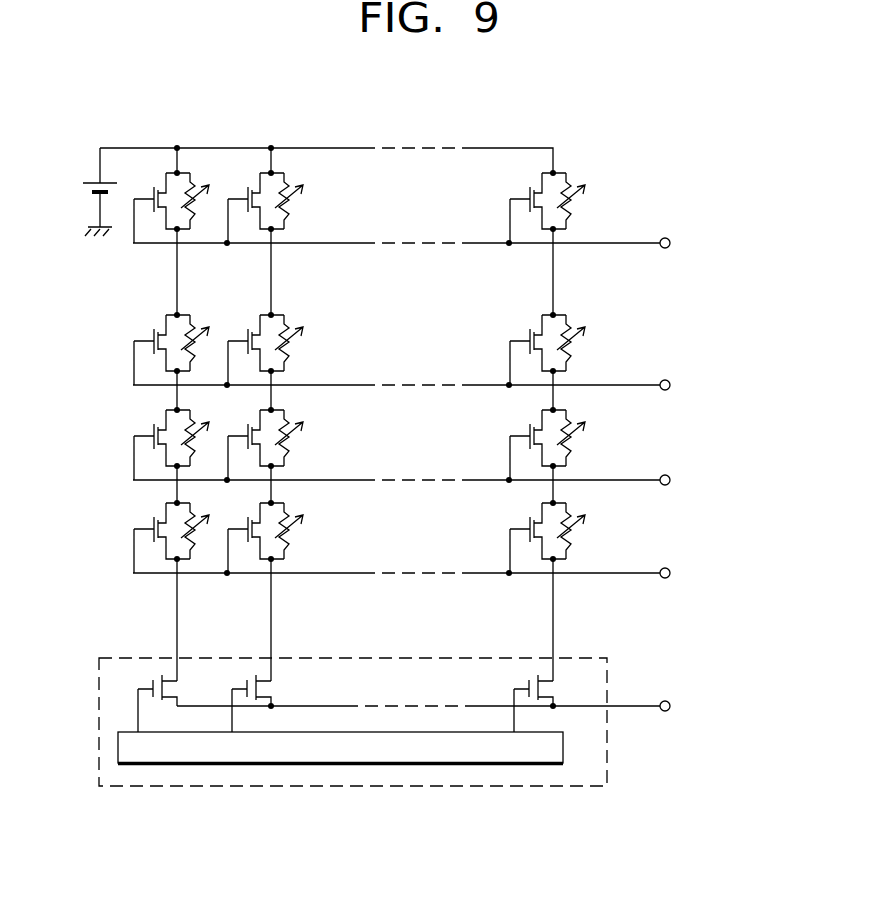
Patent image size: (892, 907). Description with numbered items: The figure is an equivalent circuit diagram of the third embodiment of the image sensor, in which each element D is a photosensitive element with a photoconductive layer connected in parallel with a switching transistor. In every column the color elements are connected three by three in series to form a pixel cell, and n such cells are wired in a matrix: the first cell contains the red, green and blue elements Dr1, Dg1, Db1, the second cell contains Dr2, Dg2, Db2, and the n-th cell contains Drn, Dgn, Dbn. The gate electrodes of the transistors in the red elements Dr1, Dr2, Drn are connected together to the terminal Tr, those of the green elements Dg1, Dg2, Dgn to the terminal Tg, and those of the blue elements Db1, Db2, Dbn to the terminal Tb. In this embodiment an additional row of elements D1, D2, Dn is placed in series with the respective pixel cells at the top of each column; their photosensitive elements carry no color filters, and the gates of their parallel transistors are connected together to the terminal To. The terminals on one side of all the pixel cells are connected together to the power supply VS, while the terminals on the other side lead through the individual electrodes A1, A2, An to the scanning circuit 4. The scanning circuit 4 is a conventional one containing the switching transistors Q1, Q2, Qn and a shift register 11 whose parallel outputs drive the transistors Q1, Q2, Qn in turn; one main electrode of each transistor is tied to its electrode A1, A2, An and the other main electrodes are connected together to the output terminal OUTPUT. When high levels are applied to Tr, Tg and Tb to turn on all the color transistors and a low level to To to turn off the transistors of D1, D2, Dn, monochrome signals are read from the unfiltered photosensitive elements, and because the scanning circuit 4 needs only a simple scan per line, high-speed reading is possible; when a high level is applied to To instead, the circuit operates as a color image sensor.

The scanning circuit 4 is at (424, 753).
The shift register 11 is at (497, 765).
The power supply VS is at (93, 192).
The element D1 is at (175, 201).
The element D2 is at (272, 201).
The element Dn is at (554, 201).
The element Dr1 is at (178, 342).
The element Dr2 is at (274, 342).
The element Drn is at (557, 342).
The element Dg1 is at (180, 438).
The element Dg2 is at (275, 438).
The element Dgn is at (558, 438).
The element Db1 is at (180, 530).
The element Db2 is at (275, 530).
The element Dbn is at (558, 530).
The individual electrode A1 is at (187, 620).
The individual electrode A2 is at (285, 620).
The individual electrode An is at (567, 620).
The switching transistor Q1 is at (152, 699).
The switching transistor Q2 is at (245, 699).
The switching transistor Qn is at (527, 699).
The terminal To is at (417, 242).
The terminal Tr is at (417, 385).
The terminal Tg is at (417, 480).
The terminal Tb is at (417, 573).
The output terminal OUTPUT is at (463, 708).